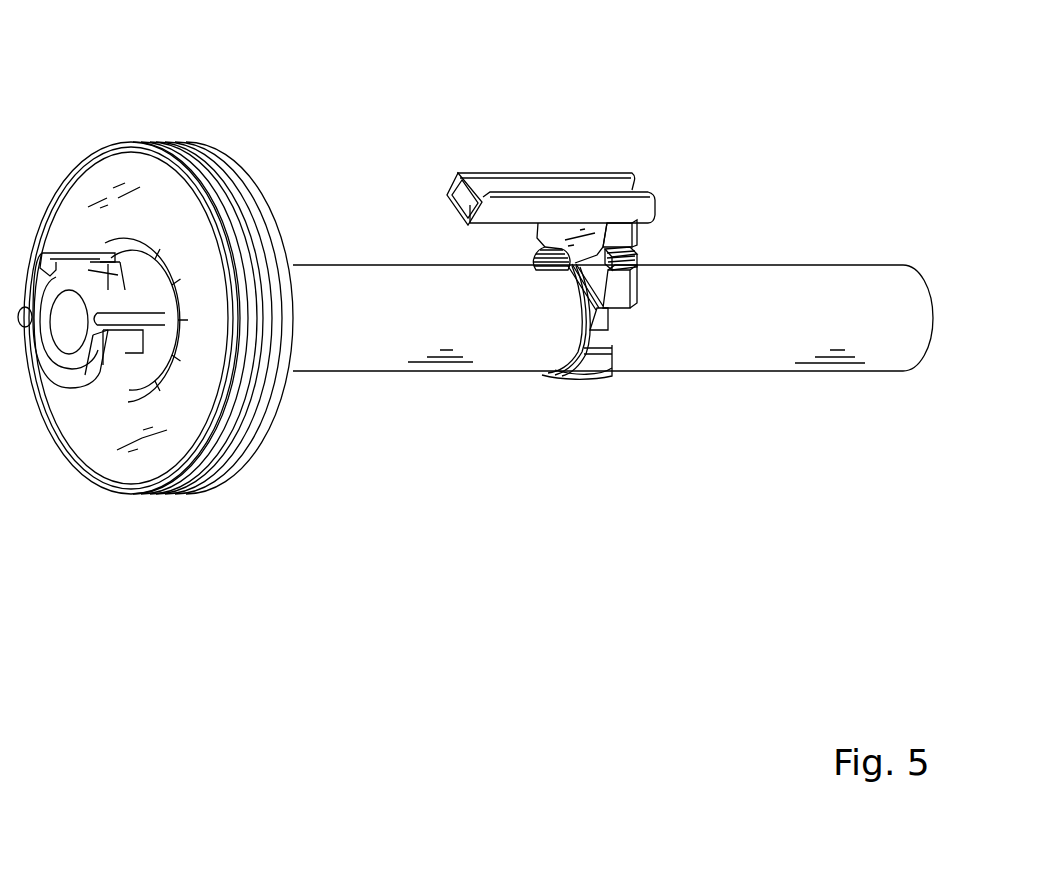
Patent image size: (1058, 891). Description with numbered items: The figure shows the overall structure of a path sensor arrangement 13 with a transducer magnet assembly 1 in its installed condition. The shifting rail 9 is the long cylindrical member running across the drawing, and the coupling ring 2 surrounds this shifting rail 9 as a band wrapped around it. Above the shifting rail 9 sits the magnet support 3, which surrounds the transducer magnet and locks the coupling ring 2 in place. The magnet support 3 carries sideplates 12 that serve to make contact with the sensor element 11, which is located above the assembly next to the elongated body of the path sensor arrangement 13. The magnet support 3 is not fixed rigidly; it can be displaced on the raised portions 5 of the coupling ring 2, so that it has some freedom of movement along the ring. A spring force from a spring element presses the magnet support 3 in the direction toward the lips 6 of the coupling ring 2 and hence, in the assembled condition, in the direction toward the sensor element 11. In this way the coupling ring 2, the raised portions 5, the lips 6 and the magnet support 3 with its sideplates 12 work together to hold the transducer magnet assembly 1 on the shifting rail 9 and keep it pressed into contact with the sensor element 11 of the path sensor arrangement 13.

The transducer magnet assembly 1 is at (549, 292).
The coupling ring 2 is at (587, 360).
The magnet support 3 is at (622, 290).
The raised portions 5 is at (607, 313).
The lips 6 is at (640, 257).
The shifting rail 9 is at (732, 338).
The sensor element 11 is at (648, 208).
The sideplates 12 is at (622, 237).
The path sensor arrangement 13 is at (521, 143).